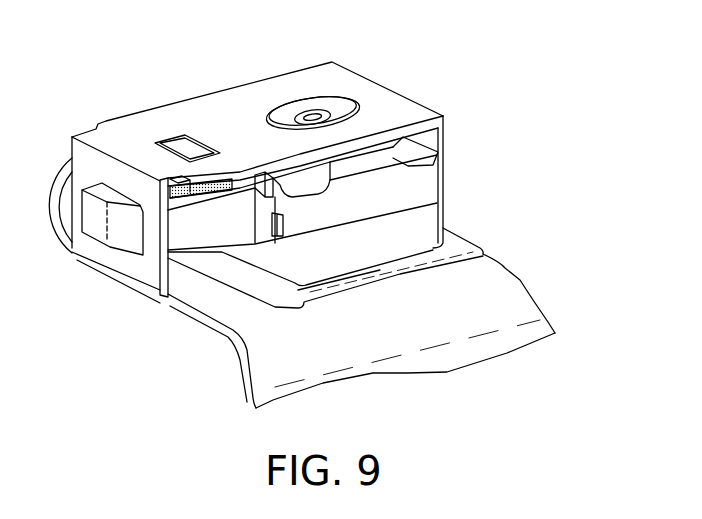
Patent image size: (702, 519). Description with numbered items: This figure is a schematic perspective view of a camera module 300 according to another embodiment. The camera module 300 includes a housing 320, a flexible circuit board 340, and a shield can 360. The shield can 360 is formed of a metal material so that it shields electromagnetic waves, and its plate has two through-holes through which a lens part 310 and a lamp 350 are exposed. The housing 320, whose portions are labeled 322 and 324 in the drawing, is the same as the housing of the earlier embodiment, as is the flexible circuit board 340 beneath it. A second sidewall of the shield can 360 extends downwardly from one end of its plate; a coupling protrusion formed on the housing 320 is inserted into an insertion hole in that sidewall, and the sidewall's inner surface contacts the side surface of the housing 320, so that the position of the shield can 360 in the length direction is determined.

The camera module 300 is at (254, 18).
The lens part 310 is at (340, 110).
The housing 320 is at (323, 251).
The base block 322 is at (415, 187).
The base plate 324 is at (95, 228).
The flexible circuit board 340 is at (507, 283).
The lamp 350 is at (187, 150).
The shield can 360 is at (247, 100).